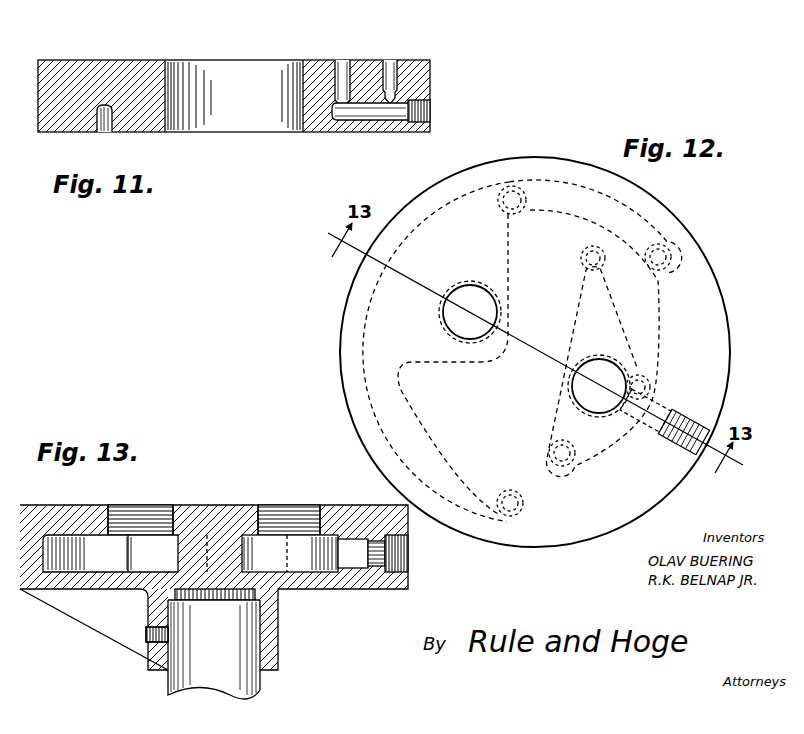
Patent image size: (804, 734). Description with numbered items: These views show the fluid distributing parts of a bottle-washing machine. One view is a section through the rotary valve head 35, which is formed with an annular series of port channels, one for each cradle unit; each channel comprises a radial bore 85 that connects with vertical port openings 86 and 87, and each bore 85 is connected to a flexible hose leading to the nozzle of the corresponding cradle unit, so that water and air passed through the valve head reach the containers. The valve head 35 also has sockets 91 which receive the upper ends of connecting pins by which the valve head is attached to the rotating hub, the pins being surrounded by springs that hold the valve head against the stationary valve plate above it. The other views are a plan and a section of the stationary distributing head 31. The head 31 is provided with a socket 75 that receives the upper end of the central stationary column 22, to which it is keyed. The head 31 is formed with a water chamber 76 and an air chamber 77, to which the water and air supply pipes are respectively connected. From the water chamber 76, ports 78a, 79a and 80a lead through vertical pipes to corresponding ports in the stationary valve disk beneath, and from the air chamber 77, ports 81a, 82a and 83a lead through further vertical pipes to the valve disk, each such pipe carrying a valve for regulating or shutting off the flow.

In FIG. 11, the rotary valve head 35 is at (118, 58).
In FIG. 11, the socket 91 is at (106, 130).
In FIG. 11, the vertical port opening 86 is at (343, 62).
In FIG. 11, the vertical port opening 87 is at (390, 62).
In FIG. 11, the radial bore 85 is at (377, 112).
In FIG. 12, the distributing head 31 is at (703, 264).
In FIG. 13, the distributing head 31 is at (225, 510).
In FIG. 12, the water chamber 76 is at (652, 322).
In FIG. 13, the water chamber 76 is at (315, 545).
In FIG. 12, the air chamber 77 is at (432, 358).
In FIG. 13, the air chamber 77 is at (88, 545).
In FIG. 12, the port 78a is at (583, 259).
In FIG. 12, the port 79a is at (636, 374).
In FIG. 12, the port 80a is at (571, 448).
In FIG. 12, the port 81a is at (511, 490).
In FIG. 12, the port 82a is at (504, 208).
In FIG. 12, the port 83a is at (658, 270).
In FIG. 13, the socket 75 is at (152, 612).
In FIG. 13, the central stationary column 22 is at (248, 675).